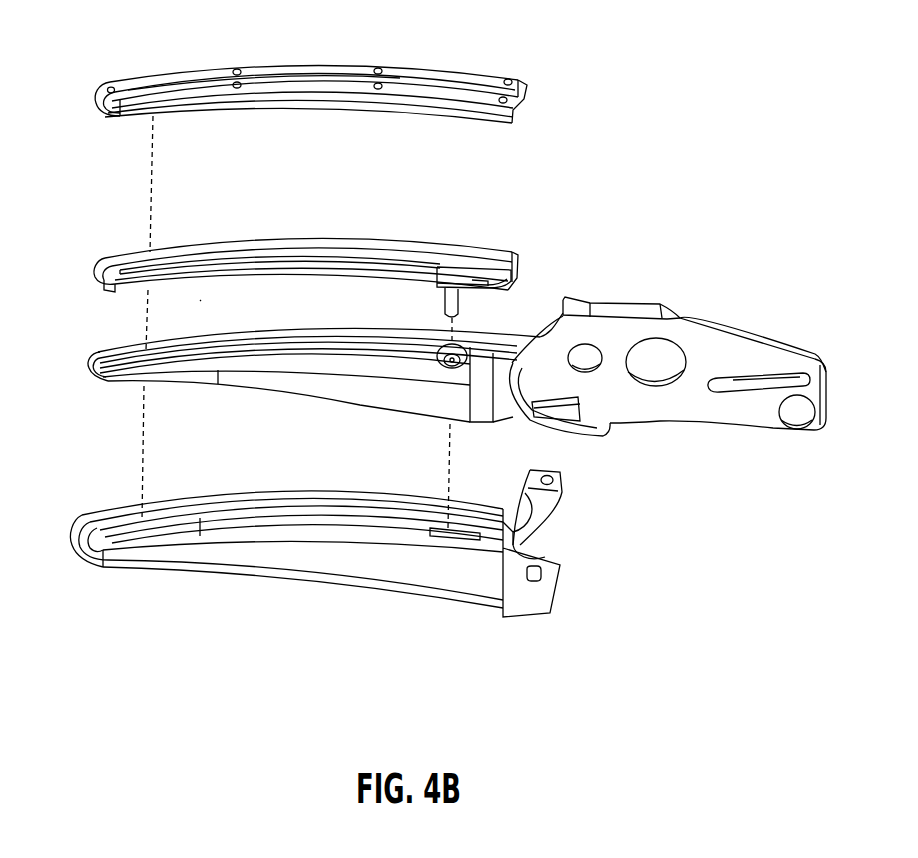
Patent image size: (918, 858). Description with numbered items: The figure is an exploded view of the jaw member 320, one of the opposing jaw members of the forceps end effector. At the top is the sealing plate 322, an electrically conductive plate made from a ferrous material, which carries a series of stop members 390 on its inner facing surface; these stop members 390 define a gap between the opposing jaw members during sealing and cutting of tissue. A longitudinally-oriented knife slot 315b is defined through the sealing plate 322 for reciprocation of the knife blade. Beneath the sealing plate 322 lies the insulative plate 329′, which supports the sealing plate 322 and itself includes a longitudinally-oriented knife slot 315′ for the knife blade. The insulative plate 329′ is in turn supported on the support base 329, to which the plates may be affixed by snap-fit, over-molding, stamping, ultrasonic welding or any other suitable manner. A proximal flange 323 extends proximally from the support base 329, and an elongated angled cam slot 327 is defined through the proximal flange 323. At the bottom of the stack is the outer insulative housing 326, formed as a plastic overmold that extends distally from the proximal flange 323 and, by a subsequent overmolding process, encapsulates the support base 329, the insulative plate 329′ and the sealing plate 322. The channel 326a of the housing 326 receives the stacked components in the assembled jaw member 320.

The jaw member 320 is at (683, 64).
The sealing plate 322 is at (346, 68).
The knife slot 315b is at (420, 82).
The stop members 390 is at (110, 86).
The knife slot 315′ is at (383, 243).
The insulative plate 329′ is at (283, 241).
The support base 329 is at (336, 333).
The proximal flange 323 is at (735, 337).
The cam slot 327 is at (758, 390).
The outer insulative housing 326 is at (376, 574).
The housing channel 326a is at (306, 495).